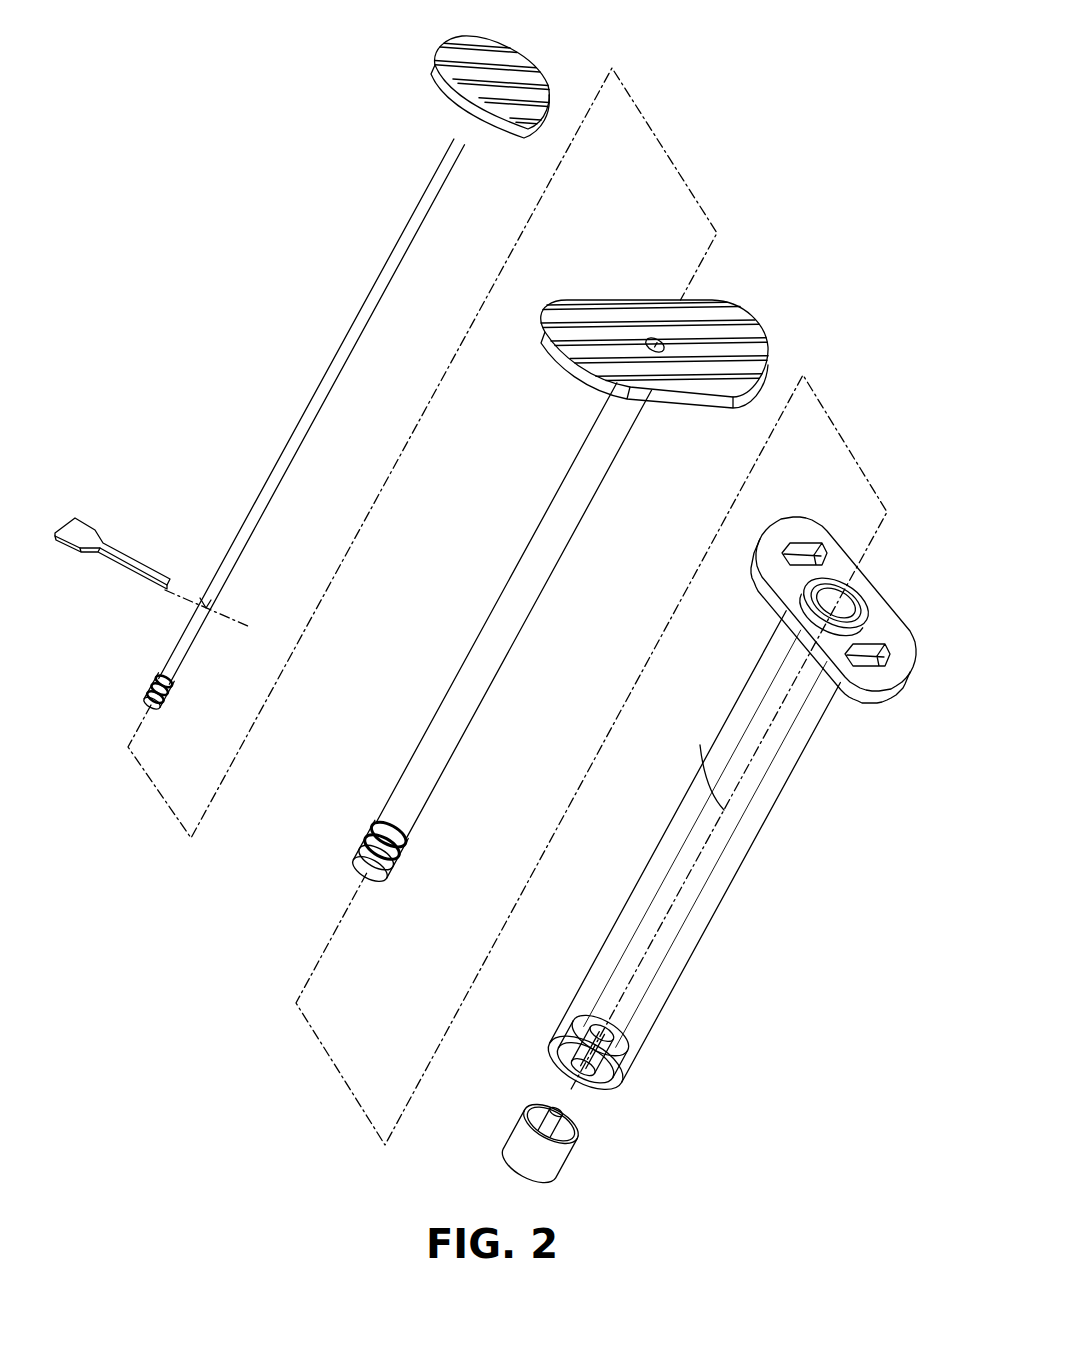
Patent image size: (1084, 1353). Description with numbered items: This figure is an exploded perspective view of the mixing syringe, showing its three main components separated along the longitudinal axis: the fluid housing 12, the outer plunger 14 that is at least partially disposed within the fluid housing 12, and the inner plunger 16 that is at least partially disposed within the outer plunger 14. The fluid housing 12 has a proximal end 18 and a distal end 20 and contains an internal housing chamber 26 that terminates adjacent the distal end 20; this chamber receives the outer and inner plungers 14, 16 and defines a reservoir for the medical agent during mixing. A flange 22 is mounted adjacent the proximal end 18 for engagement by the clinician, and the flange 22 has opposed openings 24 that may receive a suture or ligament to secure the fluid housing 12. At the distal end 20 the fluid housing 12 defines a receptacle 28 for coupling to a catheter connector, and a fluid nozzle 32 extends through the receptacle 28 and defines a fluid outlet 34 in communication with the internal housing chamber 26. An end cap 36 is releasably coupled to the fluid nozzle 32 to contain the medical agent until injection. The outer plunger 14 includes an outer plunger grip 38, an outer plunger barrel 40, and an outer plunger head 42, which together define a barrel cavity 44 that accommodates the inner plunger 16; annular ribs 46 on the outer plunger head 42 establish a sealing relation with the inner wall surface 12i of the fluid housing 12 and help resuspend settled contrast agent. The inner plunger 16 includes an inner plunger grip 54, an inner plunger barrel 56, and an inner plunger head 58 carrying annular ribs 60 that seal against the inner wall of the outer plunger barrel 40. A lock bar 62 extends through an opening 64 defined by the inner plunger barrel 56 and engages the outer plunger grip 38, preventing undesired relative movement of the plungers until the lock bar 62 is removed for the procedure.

The fluid housing 12 is at (704, 818).
The inner wall surface 12i is at (686, 916).
The outer plunger 14 is at (537, 610).
The inner plunger 16 is at (335, 394).
The proximal end 18 is at (824, 713).
The distal end 20 is at (628, 1078).
The flange 22 is at (848, 588).
The opposed openings 24 is at (797, 546).
The internal housing chamber 26 is at (622, 972).
The receptacle 28 is at (552, 1070).
The fluid nozzle 32 is at (600, 1090).
The fluid outlet 34 is at (588, 1094).
The end cap 36 is at (512, 1133).
The outer plunger grip 38 is at (665, 328).
The outer plunger barrel 40 is at (518, 562).
The outer plunger head 42 is at (364, 868).
The barrel cavity 44 is at (652, 340).
The annular ribs 46 is at (404, 862).
The inner plunger grip 54 is at (498, 57).
The inner plunger barrel 56 is at (298, 428).
The inner plunger head 58 is at (161, 703).
The annular ribs 60 is at (156, 684).
The lock bar 62 is at (78, 532).
The opening 64 is at (200, 612).